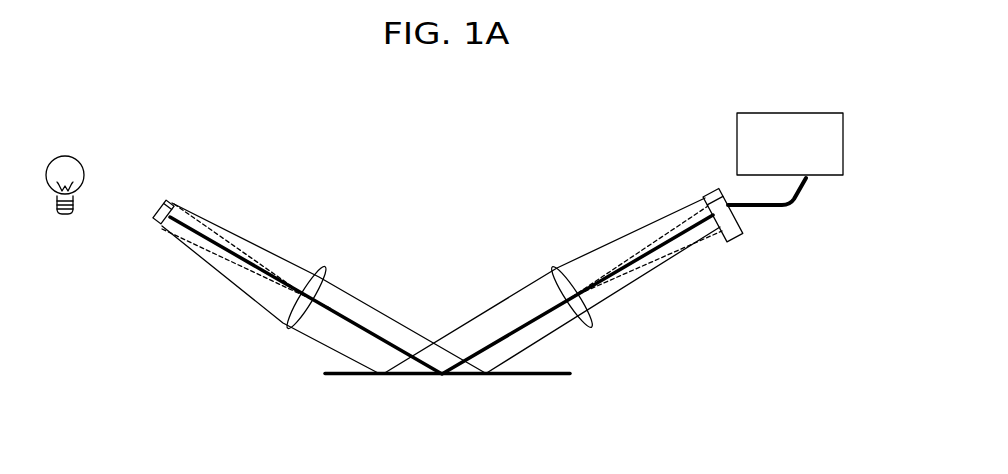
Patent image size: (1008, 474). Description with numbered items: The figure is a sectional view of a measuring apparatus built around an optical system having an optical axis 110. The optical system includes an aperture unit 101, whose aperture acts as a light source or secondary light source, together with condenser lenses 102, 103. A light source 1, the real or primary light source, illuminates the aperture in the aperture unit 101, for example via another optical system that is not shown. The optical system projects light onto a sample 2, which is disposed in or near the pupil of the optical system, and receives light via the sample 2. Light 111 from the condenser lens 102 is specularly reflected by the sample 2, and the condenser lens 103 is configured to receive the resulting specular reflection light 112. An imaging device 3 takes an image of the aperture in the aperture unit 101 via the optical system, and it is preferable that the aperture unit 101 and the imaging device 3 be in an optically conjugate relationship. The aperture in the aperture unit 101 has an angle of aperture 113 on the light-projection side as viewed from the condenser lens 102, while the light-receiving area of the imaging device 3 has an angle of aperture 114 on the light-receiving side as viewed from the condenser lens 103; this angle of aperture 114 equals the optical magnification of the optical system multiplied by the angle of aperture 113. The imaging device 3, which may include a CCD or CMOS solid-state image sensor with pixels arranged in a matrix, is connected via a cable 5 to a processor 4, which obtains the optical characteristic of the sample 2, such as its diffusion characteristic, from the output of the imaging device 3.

The light source 1 is at (83, 157).
The sample 2 is at (522, 375).
The imaging device 3 is at (707, 187).
The processor 4 is at (795, 113).
The cable 5 is at (790, 209).
The aperture unit 101 is at (155, 199).
The condenser lens 102 is at (289, 328).
The condenser lens 103 is at (593, 329).
The optical axis 110 is at (356, 328).
The light 111 is at (236, 283).
The specular reflection light 112 is at (642, 277).
The angle of aperture on the light-projection side 113 is at (183, 237).
The angle of aperture on the light-receiving side 114 is at (702, 233).